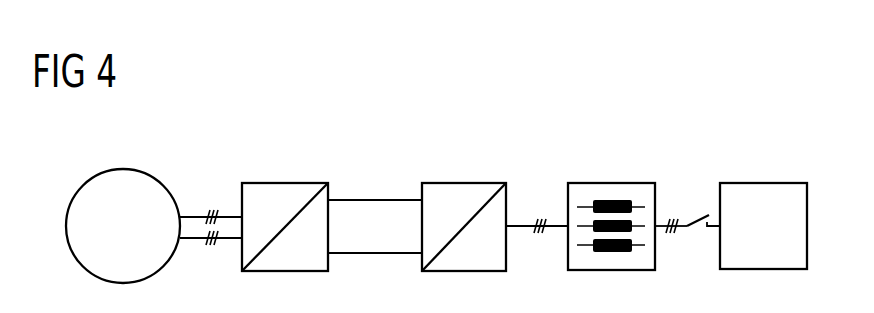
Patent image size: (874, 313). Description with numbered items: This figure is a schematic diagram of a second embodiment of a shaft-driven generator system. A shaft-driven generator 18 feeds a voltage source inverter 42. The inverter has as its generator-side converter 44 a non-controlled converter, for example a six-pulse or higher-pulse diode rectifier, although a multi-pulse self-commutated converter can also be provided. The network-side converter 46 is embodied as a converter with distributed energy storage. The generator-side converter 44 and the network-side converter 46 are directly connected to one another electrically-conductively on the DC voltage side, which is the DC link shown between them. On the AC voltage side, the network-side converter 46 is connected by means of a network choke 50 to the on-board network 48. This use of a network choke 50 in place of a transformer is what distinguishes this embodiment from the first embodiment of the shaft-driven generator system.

The generator 18 is at (151, 176).
The DC link 42 is at (361, 178).
The AC/DC converter 44 is at (280, 183).
The DC/AC converter 46 is at (456, 183).
The grid / load 48 is at (758, 183).
The filter unit 50 is at (607, 183).